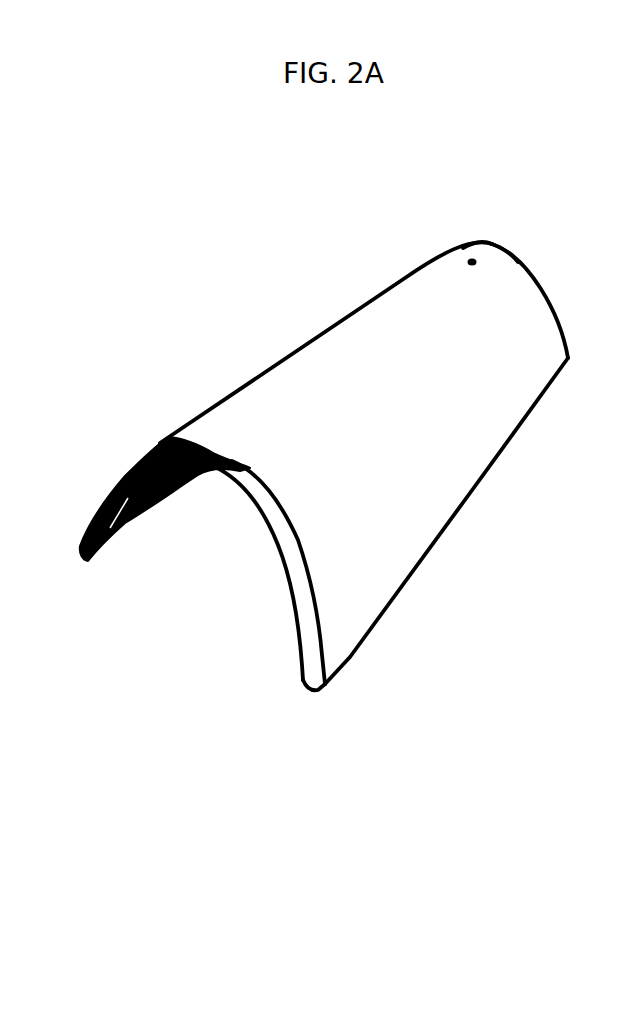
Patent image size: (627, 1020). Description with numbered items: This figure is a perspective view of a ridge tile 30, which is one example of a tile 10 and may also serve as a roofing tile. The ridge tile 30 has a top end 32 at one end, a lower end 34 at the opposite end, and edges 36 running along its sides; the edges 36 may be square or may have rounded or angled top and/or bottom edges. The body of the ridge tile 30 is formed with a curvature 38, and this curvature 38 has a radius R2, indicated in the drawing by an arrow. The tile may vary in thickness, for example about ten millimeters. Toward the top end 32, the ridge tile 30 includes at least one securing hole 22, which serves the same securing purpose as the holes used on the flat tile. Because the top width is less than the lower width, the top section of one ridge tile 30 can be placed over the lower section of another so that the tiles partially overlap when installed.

The tile 10 is at (204, 242).
The securing hole 22 is at (467, 246).
The ridge tile 30 is at (470, 493).
The top end 32 is at (512, 242).
The lower end 34 is at (313, 695).
The edges 36 is at (370, 633).
The curvature 38 is at (180, 505).
The radius R2 is at (205, 468).